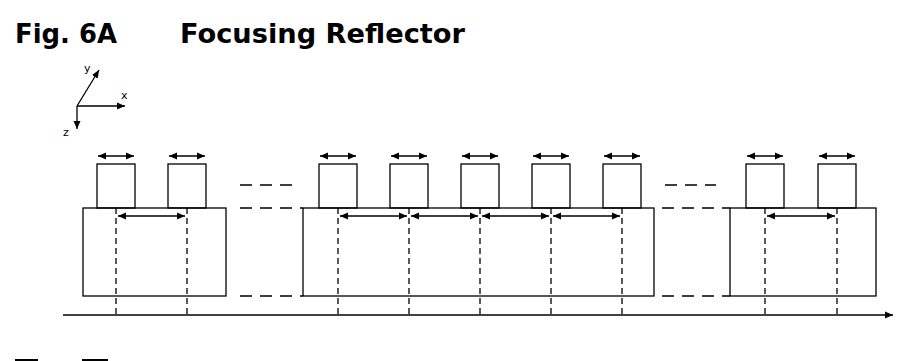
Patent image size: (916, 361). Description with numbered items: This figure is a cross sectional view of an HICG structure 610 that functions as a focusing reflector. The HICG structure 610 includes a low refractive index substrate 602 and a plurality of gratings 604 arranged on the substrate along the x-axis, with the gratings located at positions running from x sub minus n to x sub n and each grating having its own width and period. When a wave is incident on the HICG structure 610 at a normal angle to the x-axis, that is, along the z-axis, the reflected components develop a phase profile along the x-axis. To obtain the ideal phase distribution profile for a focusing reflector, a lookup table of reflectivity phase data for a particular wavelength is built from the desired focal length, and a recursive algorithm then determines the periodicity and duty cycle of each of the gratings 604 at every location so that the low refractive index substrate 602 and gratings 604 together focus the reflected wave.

The low refractive index substrate 602 is at (873, 284).
The plurality of gratings 604 is at (863, 144).
The HICG structure 610 is at (849, 85).